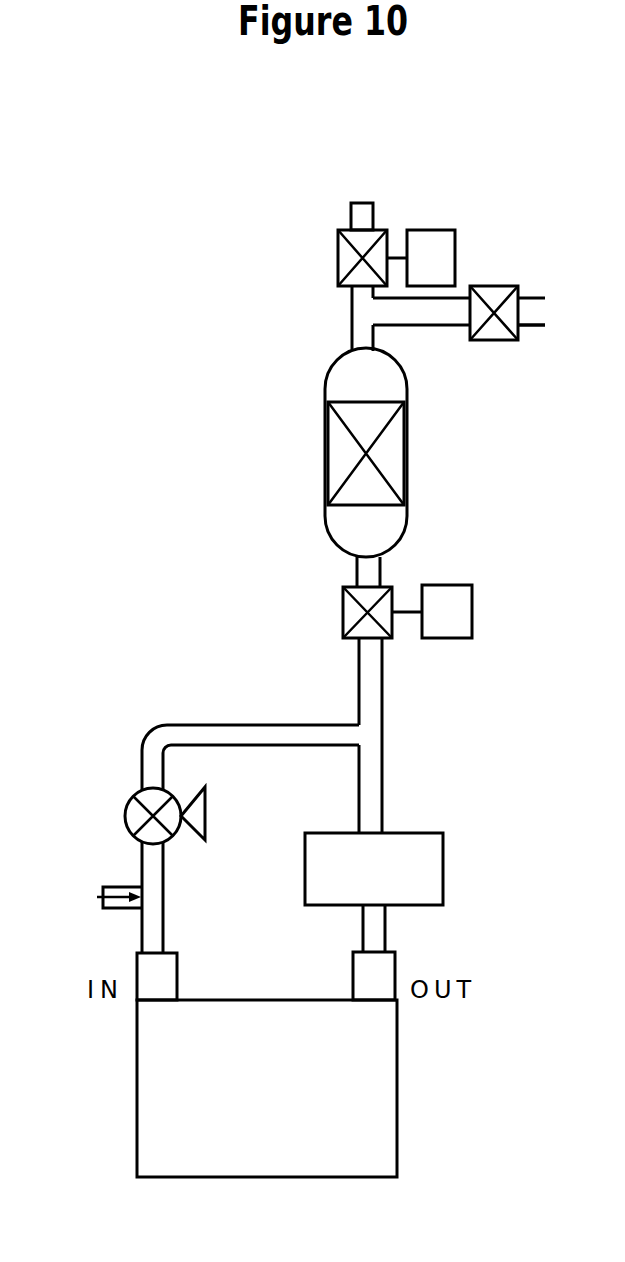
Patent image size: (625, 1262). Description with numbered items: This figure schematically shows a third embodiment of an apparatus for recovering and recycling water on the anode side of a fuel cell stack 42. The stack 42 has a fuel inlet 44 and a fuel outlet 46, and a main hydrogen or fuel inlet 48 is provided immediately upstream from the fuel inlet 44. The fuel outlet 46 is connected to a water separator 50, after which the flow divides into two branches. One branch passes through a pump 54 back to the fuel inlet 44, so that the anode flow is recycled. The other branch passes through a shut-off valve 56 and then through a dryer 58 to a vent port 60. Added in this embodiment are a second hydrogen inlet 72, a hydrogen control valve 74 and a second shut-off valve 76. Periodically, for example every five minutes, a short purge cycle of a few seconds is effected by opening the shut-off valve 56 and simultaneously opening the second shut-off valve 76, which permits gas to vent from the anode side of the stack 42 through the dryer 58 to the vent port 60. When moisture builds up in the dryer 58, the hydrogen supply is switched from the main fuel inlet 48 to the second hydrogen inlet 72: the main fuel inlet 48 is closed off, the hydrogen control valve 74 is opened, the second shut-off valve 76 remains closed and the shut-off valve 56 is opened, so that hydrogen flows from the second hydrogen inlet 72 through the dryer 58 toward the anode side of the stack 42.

The fuel cell stack 42 is at (267, 1088).
The fuel inlet 44 is at (168, 970).
The fuel outlet 46 is at (360, 977).
The main hydrogen or fuel inlet 48 is at (128, 917).
The water separator 50 is at (311, 845).
The pump 54 is at (130, 813).
The shut-off valve 56 is at (350, 615).
The dryer 58 is at (335, 470).
The vent port 60 is at (350, 213).
The second hydrogen inlet 72 is at (531, 293).
The hydrogen control valve 74 is at (487, 342).
The second shut-off valve 76 is at (396, 256).